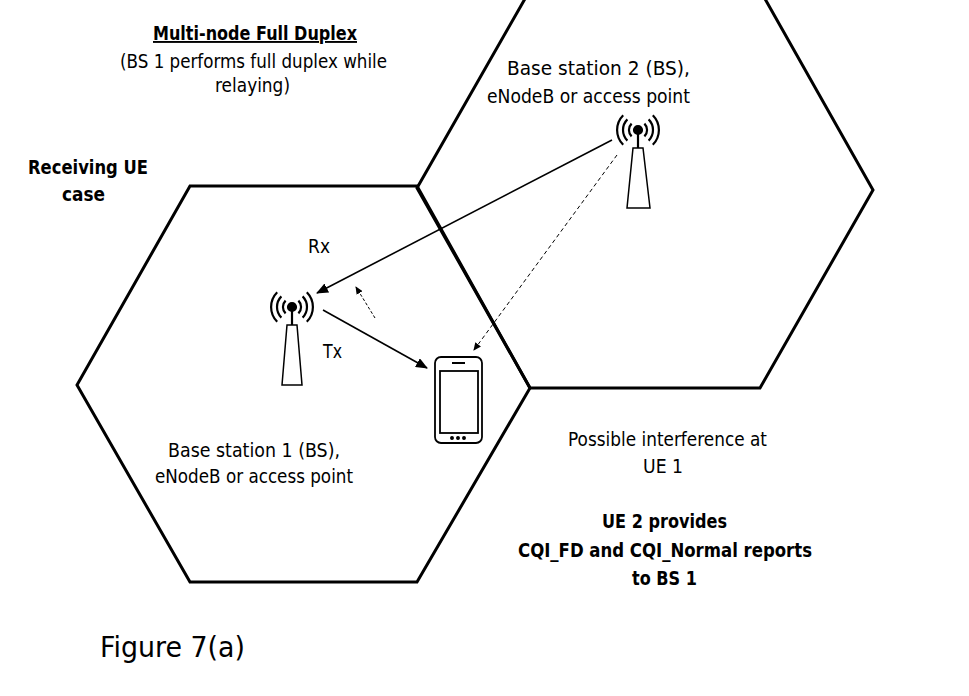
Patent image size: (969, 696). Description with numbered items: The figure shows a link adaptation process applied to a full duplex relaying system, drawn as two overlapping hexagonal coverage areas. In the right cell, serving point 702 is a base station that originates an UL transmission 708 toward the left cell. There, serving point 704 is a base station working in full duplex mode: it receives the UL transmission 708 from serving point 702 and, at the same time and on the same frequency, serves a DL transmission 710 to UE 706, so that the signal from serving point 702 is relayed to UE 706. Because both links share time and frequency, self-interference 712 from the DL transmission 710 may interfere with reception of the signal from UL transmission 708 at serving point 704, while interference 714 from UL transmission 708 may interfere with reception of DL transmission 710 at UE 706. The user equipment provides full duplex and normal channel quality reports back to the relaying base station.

The serving point 702 is at (648, 198).
The serving point 704 is at (282, 373).
The UE 706 is at (450, 445).
The UL transmission 708 is at (410, 243).
The DL transmission 710 is at (405, 361).
The self-interference 712 is at (393, 300).
The interference 714 is at (547, 248).